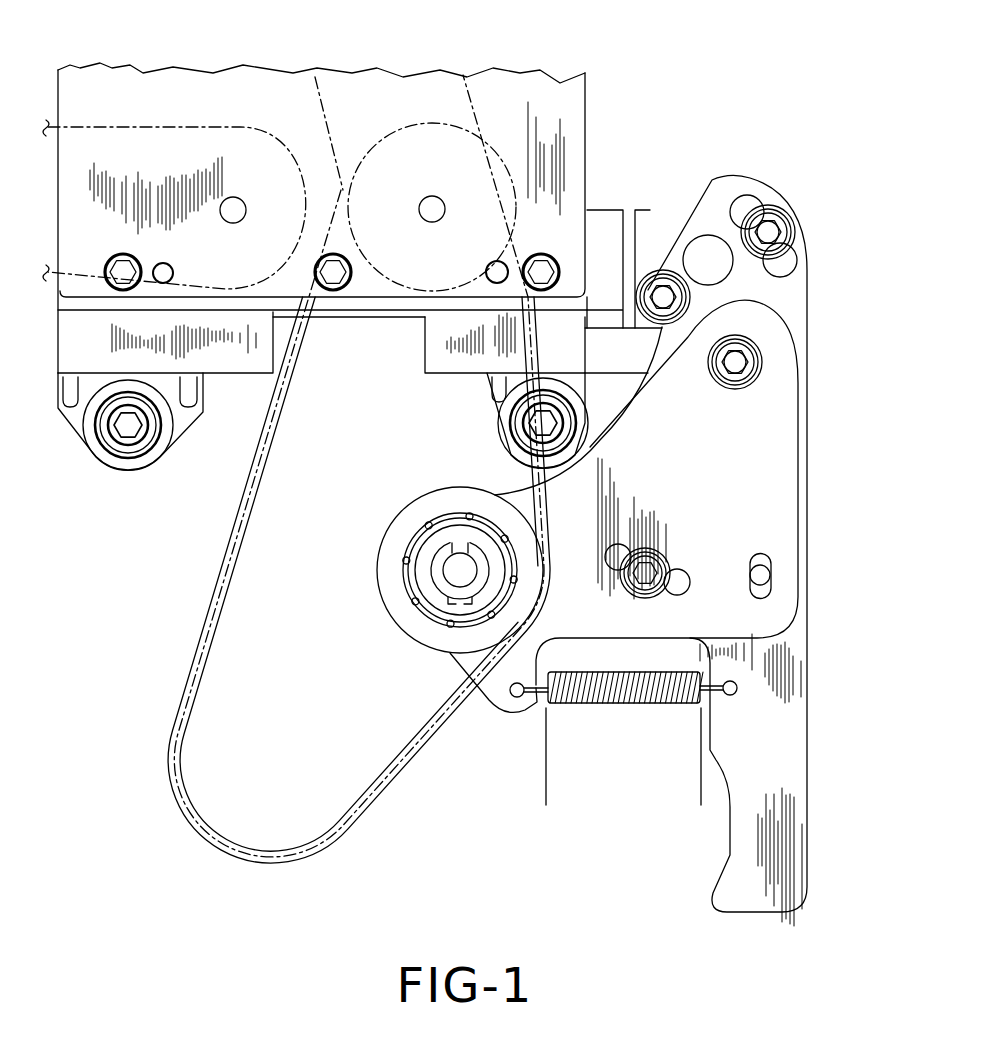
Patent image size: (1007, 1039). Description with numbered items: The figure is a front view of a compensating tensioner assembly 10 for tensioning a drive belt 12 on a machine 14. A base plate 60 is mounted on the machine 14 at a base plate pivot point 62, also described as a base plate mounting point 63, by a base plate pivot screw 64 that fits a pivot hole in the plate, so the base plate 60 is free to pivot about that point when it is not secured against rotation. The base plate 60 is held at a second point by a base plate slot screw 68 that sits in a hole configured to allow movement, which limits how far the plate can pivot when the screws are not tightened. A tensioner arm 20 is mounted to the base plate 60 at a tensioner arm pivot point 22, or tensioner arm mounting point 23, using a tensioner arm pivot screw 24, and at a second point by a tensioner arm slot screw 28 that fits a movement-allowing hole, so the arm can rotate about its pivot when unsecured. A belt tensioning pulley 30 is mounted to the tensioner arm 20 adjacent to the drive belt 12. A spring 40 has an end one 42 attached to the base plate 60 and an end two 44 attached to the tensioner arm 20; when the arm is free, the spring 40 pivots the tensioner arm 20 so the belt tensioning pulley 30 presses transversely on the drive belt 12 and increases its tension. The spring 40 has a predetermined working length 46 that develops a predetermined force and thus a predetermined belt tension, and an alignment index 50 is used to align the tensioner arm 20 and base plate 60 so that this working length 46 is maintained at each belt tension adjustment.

The compensating tensioner assembly 10 is at (597, 502).
The drive belt 12 is at (356, 829).
The machine 14 is at (597, 113).
The tensioner arm 20 is at (777, 470).
The tensioner arm pivot point 22 is at (704, 396).
The tensioner arm mounting point 23 is at (735, 362).
The tensioner arm pivot screw 24 is at (759, 388).
The tensioner arm slot screw 28 is at (647, 548).
The belt tensioning pulley 30 is at (402, 605).
The spring 40 is at (665, 698).
The end one 42 is at (700, 700).
The end two 44 is at (547, 700).
The working length 46 is at (701, 793).
The alignment index 50 is at (770, 558).
The base plate 60 is at (780, 288).
The base plate pivot point 62 is at (677, 220).
The base plate mounting point 63 is at (663, 296).
The base plate pivot screw 64 is at (653, 228).
The base plate slot screw 68 is at (773, 212).